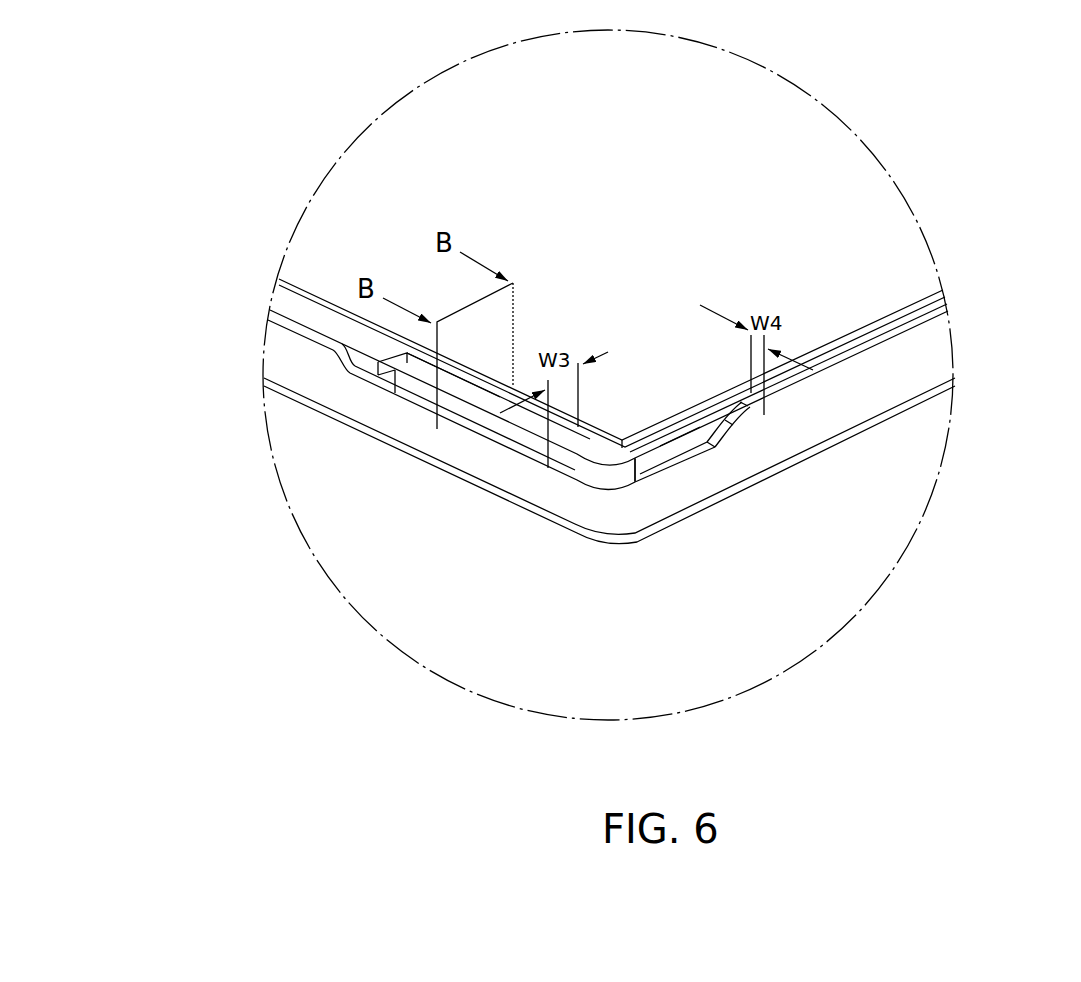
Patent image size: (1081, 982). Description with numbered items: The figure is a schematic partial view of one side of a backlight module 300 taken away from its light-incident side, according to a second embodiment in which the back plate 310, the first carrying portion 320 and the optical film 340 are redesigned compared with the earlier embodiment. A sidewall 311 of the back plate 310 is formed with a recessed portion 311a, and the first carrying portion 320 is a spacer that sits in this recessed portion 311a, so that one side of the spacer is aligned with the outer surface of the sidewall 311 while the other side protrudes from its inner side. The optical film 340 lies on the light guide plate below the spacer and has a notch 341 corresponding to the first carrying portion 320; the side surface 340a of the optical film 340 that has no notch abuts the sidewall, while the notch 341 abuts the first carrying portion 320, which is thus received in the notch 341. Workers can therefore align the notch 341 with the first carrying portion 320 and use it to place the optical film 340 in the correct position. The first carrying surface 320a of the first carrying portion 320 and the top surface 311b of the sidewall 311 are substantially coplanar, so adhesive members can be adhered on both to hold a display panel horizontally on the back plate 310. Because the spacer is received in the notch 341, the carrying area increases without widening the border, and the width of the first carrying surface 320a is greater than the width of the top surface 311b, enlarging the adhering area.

The backlight module 300 is at (226, 70).
The back plate 310 is at (746, 511).
The sidewall 311 is at (778, 386).
The recessed portion 311a is at (650, 482).
The top surface 311b is at (775, 442).
The first carrying portion 320 is at (474, 423).
The first carrying surface 320a is at (523, 420).
The optical film 340 is at (805, 120).
The side surface 340a is at (843, 340).
The notch 341 is at (406, 358).